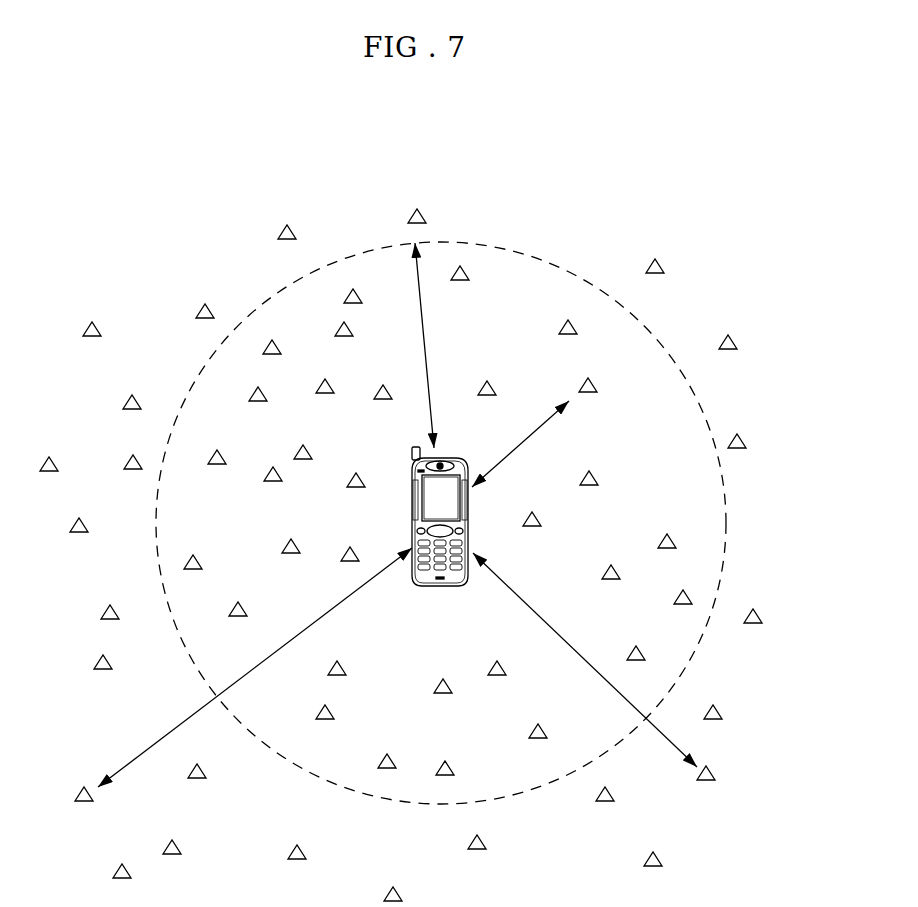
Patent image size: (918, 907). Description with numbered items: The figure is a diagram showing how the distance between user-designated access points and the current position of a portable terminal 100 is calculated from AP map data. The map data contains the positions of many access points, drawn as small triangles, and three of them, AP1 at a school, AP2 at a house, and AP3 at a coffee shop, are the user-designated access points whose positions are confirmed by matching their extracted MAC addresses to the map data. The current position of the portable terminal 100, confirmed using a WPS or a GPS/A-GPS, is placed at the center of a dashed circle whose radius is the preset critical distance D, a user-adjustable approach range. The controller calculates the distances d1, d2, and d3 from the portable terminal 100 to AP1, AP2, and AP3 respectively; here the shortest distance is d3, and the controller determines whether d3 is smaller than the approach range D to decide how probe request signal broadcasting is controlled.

The portable terminal 100 is at (440, 592).
The user-designated AP (school) AP1 is at (89, 811).
The user-designated AP (house) AP2 is at (709, 787).
The user-designated AP (coffee shop) AP3 is at (660, 398).
The preset critical distance D is at (429, 345).
The distance to AP1 d1 is at (255, 667).
The distance to AP2 d2 is at (585, 660).
The distance to AP3 d3 is at (520, 444).